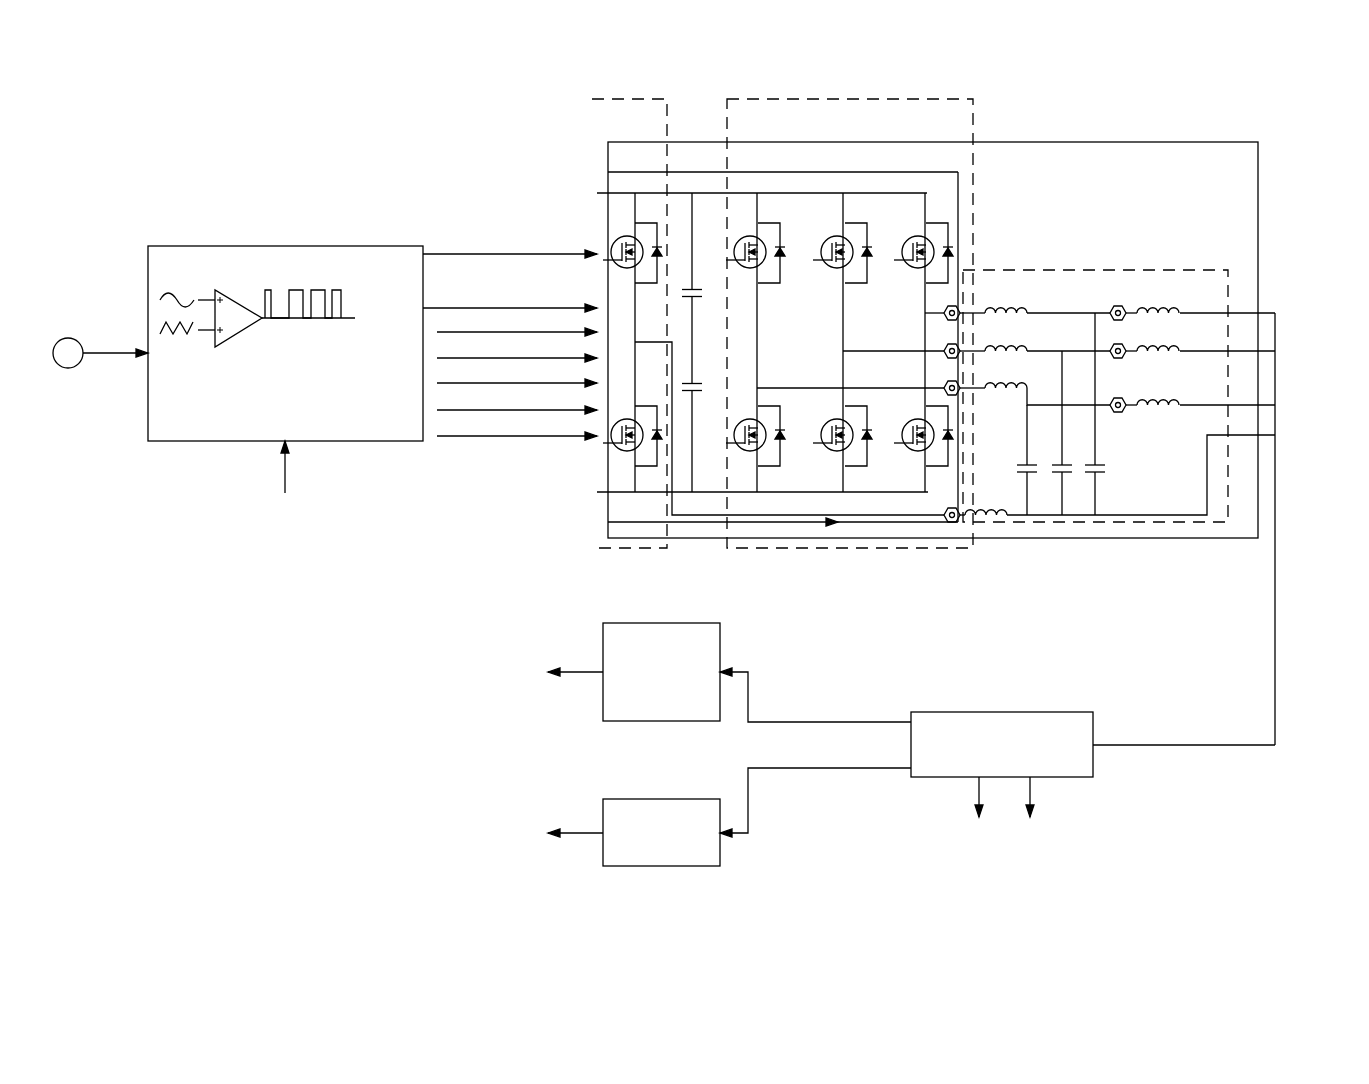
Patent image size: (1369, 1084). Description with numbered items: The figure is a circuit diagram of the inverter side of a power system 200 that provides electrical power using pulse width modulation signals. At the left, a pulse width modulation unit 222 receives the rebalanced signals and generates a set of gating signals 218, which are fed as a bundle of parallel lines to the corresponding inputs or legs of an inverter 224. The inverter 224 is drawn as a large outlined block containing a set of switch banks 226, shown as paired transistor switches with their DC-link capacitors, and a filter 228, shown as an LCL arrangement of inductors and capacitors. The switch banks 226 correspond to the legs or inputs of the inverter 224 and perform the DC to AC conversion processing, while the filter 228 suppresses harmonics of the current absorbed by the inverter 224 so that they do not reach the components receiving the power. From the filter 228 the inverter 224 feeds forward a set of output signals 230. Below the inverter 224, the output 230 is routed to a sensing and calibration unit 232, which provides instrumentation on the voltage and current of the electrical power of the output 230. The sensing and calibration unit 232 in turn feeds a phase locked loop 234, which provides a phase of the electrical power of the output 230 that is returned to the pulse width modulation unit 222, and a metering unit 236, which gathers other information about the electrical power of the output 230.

The power system 200 is at (319, 108).
The pulse width modulation unit 222 is at (285, 343).
The gating signals 218 is at (510, 317).
The inverter 224 is at (1156, 141).
The switch banks 226 is at (842, 323).
The filter 228 is at (1157, 268).
The output signals 230 is at (1222, 529).
The sensing and calibration unit 232 is at (1002, 782).
The phase locked loop 234 is at (721, 672).
The metering unit 236 is at (714, 816).